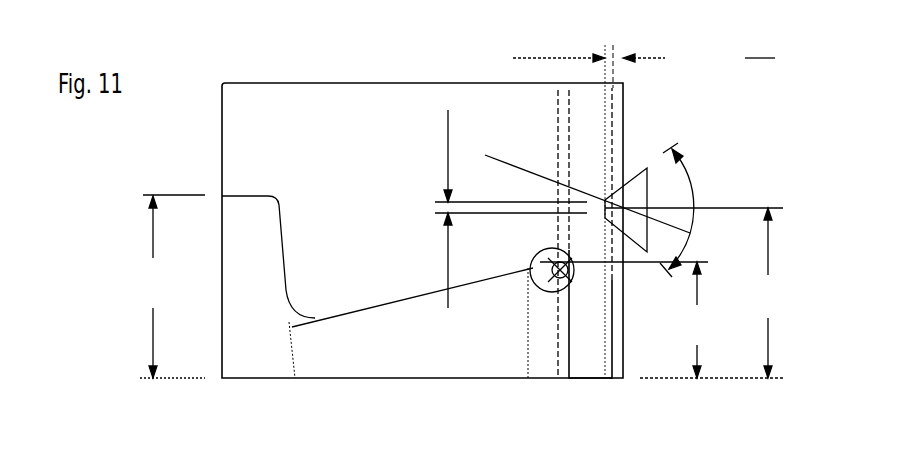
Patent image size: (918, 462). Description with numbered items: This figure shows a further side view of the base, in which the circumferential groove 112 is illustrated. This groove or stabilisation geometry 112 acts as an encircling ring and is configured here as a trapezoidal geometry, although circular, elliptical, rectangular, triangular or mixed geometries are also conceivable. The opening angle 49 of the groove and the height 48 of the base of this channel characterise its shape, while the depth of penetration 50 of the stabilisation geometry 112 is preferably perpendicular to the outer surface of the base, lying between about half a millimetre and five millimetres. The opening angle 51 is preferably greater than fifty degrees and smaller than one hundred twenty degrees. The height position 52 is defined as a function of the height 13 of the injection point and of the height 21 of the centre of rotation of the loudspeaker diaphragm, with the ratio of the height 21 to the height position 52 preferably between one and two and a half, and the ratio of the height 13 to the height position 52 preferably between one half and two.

The height of the injection point 13 is at (161, 286).
The height of the base of the channel 48 is at (486, 209).
The opening angle of the groove 49 is at (587, 177).
The depth of penetration 50 is at (644, 57).
The opening angle 51 is at (700, 207).
The height position 52 is at (695, 293).
The height of the centre of rotation of the loudspeaker diaphragm 21 is at (624, 320).
The circumferential groove 112 is at (705, 187).